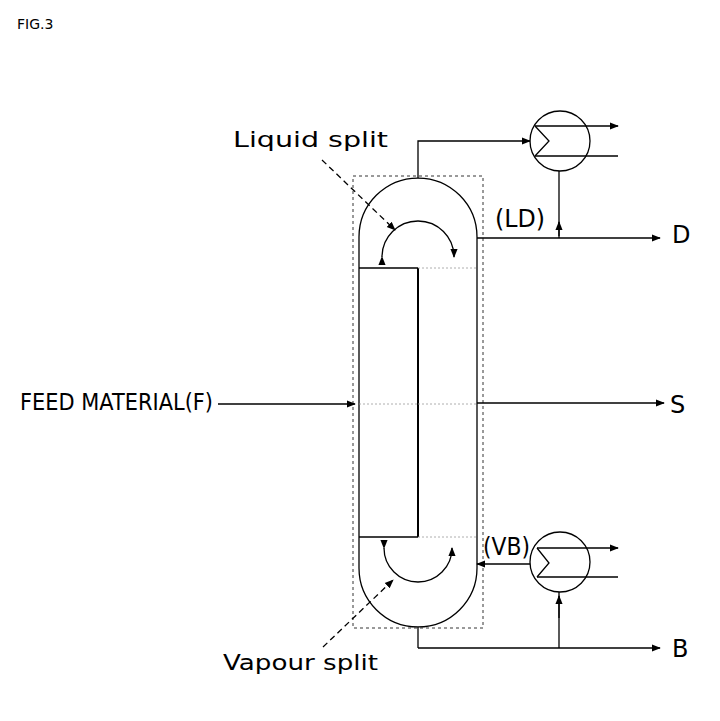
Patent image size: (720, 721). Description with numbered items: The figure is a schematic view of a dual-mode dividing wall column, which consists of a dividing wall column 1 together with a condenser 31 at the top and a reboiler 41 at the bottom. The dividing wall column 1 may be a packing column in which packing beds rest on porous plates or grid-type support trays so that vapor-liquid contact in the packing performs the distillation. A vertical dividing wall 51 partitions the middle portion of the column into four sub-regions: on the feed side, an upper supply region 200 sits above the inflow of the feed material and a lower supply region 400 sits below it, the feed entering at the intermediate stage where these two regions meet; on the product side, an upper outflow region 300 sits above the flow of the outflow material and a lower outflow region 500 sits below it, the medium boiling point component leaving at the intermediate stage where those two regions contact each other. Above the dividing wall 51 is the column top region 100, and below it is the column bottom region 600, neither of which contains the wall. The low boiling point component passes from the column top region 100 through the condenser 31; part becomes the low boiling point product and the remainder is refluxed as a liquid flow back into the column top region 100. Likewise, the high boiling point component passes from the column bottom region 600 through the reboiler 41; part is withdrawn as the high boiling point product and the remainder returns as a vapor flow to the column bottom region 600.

The dividing wall column 1 is at (345, 300).
The condenser 31 is at (562, 110).
The reboiler 41 is at (562, 532).
The dividing wall 51 is at (420, 313).
The column top region 100 is at (418, 223).
The upper supply region 200 is at (388, 339).
The upper outflow region 300 is at (447, 339).
The lower supply region 400 is at (388, 498).
The lower outflow region 500 is at (447, 498).
The column bottom region 600 is at (418, 583).